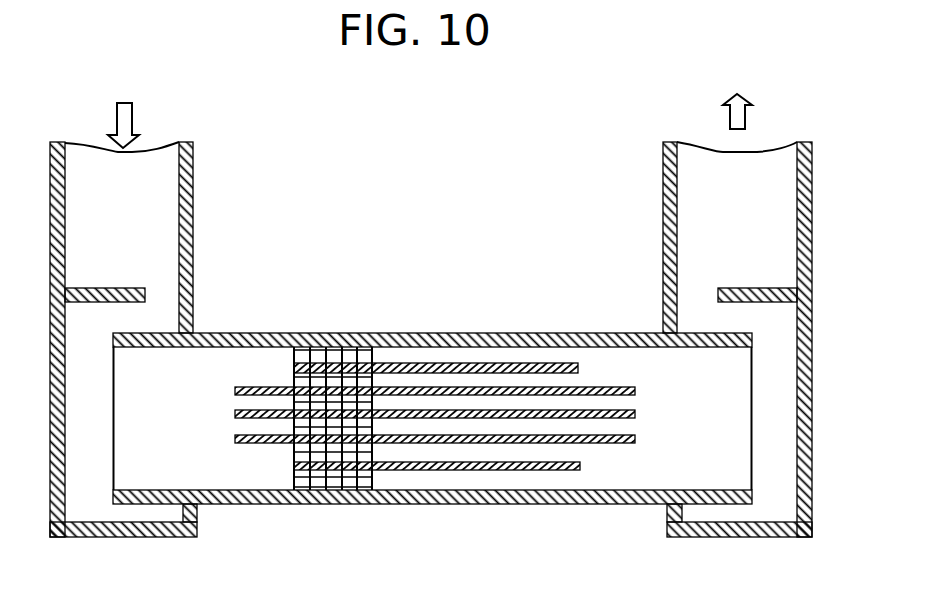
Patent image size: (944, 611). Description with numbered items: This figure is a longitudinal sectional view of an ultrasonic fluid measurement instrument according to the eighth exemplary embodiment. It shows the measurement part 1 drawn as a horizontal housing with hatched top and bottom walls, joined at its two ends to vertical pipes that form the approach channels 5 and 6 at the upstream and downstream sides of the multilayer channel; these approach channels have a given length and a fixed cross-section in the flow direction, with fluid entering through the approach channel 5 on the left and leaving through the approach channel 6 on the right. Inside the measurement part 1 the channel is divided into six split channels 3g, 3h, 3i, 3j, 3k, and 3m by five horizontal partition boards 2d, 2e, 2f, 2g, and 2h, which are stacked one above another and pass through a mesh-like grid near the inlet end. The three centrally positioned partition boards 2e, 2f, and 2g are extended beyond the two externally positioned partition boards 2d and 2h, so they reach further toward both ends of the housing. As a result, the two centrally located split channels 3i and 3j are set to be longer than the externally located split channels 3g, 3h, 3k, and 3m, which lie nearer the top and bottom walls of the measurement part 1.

The measurement part 1 is at (472, 333).
The approach channel 5 is at (147, 478).
The approach channel 6 is at (727, 477).
The partition board 2d is at (293, 367).
The partition board 2e is at (235, 390).
The partition board 2f is at (235, 414).
The partition board 2g is at (235, 438).
The partition board 2h is at (293, 467).
The split channel 3g is at (565, 355).
The split channel 3h is at (568, 380).
The split channel 3i is at (583, 404).
The split channel 3j is at (583, 428).
The split channel 3k is at (568, 453).
The split channel 3m is at (563, 482).